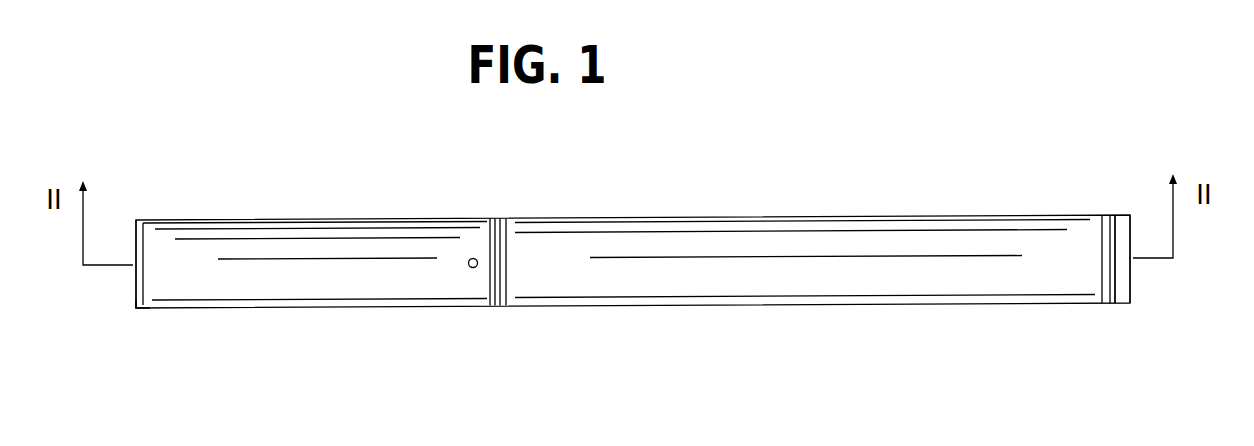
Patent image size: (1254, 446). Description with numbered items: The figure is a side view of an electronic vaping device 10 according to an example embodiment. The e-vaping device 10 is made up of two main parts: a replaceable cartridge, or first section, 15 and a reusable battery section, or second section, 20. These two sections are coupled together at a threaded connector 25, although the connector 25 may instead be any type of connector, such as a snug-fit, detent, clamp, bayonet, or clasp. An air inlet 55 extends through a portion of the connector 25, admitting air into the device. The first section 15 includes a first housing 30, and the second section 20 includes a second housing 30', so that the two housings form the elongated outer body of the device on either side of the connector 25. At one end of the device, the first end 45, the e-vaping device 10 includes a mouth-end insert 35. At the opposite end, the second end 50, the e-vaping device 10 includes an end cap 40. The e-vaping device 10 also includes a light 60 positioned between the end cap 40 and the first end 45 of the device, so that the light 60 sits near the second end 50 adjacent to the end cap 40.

The electronic vaping device 10 is at (414, 324).
The replaceable cartridge 15 is at (273, 307).
The reusable battery section 20 is at (568, 305).
The threaded connector 25 is at (497, 218).
The first housing 30 is at (319, 334).
The second housing 30' is at (805, 316).
The mouth-end insert 35 is at (133, 282).
The end cap 40 is at (1132, 304).
The first end 45 is at (149, 323).
The second end 50 is at (1139, 293).
The air inlet 55 is at (468, 259).
The light 60 is at (1110, 304).